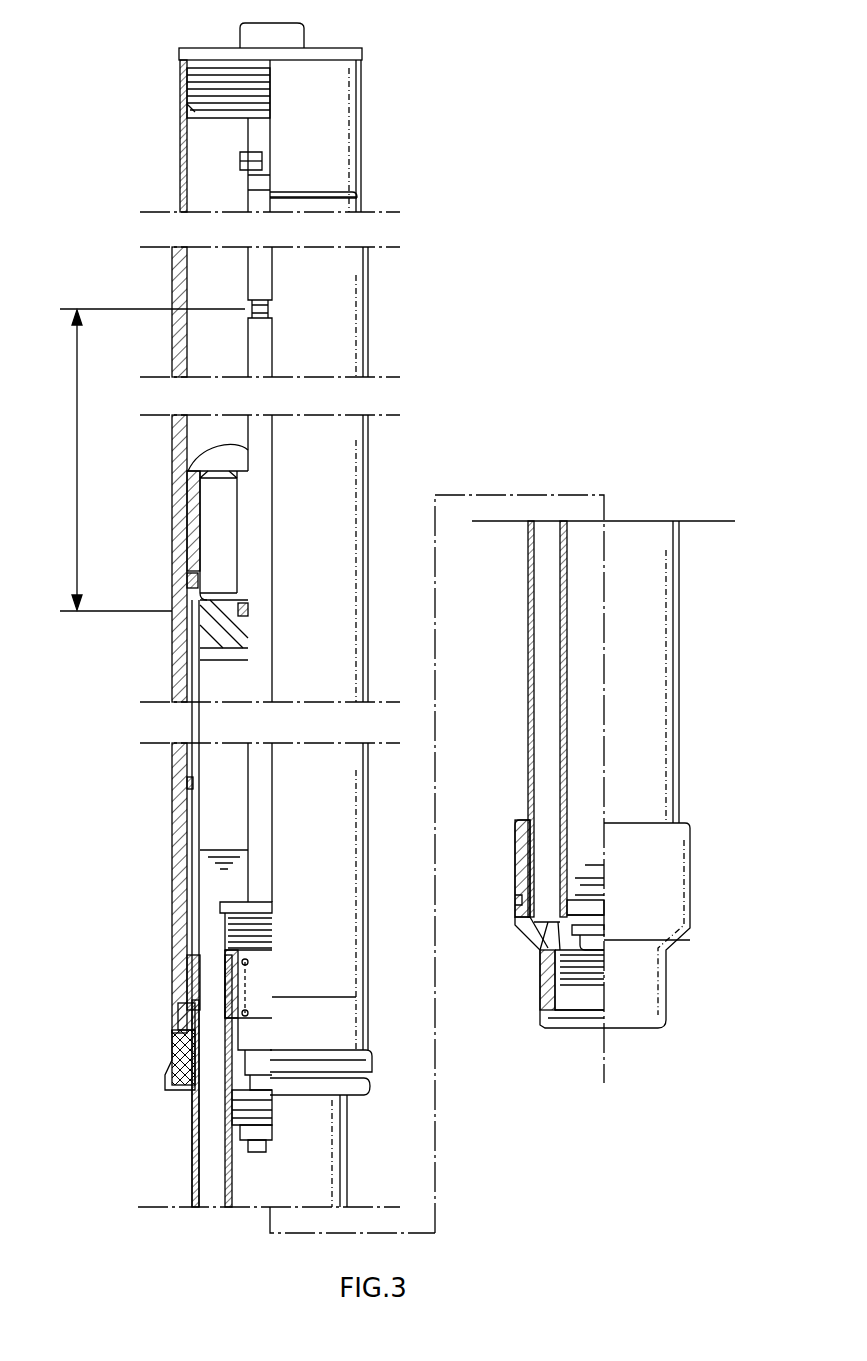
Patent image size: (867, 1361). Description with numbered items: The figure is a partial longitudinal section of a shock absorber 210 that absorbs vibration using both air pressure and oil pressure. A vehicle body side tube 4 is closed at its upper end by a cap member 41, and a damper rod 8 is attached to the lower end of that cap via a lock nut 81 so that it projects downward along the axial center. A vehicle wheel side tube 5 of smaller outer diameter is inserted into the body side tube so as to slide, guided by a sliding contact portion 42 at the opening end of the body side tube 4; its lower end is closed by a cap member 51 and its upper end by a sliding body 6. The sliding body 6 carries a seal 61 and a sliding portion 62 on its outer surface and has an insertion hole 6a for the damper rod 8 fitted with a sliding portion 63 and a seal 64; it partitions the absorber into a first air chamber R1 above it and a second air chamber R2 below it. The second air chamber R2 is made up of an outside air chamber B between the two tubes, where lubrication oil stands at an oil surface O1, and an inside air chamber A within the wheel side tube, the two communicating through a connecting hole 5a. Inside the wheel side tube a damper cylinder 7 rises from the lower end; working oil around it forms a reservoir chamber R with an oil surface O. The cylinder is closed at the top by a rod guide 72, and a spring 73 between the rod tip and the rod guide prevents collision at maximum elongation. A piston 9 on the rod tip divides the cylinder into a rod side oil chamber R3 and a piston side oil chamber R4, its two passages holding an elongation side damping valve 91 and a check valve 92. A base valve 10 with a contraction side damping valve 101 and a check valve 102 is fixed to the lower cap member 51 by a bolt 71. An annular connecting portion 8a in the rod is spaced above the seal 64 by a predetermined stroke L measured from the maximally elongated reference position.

The cap member 41 is at (210, 48).
The shock absorber 210 is at (406, 66).
The lock nut 81 is at (240, 148).
The damper rod 8 is at (245, 192).
The vehicle body side tube 4 is at (180, 150).
The first air chamber R1 is at (205, 182).
The connecting portion 8a is at (268, 312).
The predetermined stroke L is at (77, 460).
The sliding body 6 is at (195, 488).
The sliding portion 62 is at (192, 530).
The seal 61 is at (190, 576).
The seal 64 is at (250, 606).
The sliding portion 63 is at (250, 632).
The outside air chamber B is at (188, 628).
The insertion hole 6a is at (215, 640).
The connecting hole 5a is at (250, 675).
The inside air chamber A is at (238, 692).
The second air chamber R2 is at (195, 750).
The oil surface O1 is at (190, 778).
The oil surface O is at (215, 848).
The reservoir chamber R is at (208, 923).
The rod guide 72 is at (268, 925).
The spring 73 is at (250, 963).
The sliding contact portion 42 is at (190, 968).
The rod side oil chamber R3 is at (200, 1020).
The check valve 92 is at (235, 1098).
The vehicle wheel side tube 5 is at (192, 1143).
The damper cylinder 7 is at (225, 1183).
The elongation side damping valve 91 is at (268, 1132).
The piston side oil chamber R4 is at (252, 1192).
The piston 9 is at (242, 1152).
The base valve 10 is at (584, 858).
The cap member 51 is at (515, 865).
The check valve 102 is at (588, 878).
The contraction side damping valve 101 is at (610, 948).
The bolt 71 is at (580, 1035).